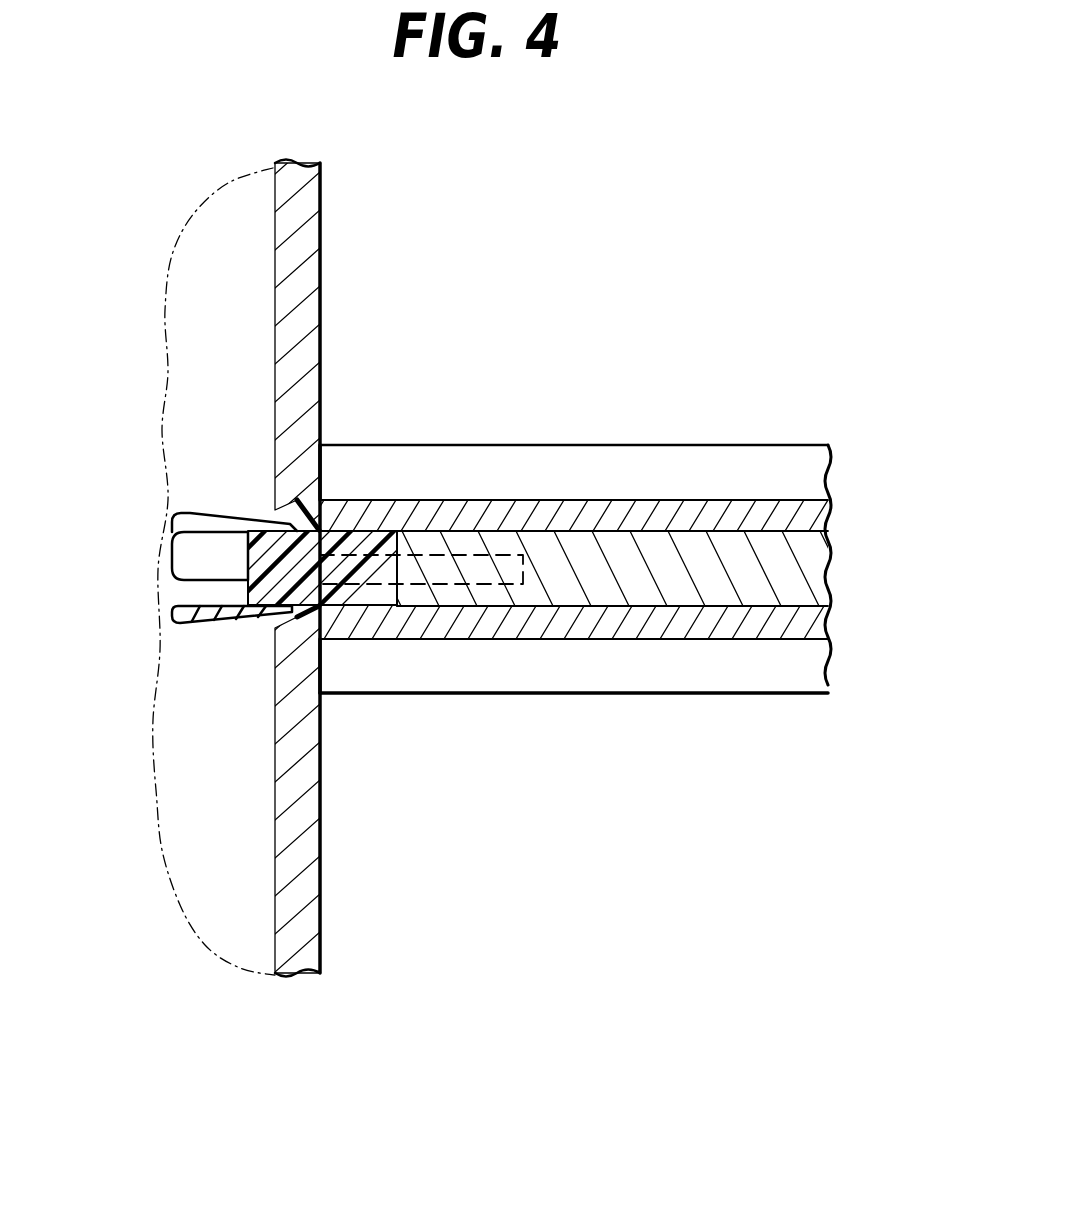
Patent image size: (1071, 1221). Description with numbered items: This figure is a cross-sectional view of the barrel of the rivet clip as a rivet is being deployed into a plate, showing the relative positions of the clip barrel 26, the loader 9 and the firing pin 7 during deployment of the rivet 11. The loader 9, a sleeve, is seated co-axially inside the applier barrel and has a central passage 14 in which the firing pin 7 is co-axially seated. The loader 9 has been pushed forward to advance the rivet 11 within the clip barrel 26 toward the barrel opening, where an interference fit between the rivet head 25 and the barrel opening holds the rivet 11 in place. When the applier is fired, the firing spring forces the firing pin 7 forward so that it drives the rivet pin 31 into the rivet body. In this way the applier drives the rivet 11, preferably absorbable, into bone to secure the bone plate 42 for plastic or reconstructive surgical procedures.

The firing pin 7 is at (813, 563).
The loader 9 is at (826, 517).
The rivet 11 is at (168, 553).
The central passage 14 is at (712, 533).
The rivet head 25 is at (292, 513).
The clip barrel 26 is at (637, 694).
The rivet pin 31 is at (252, 585).
The bone plate 42 is at (305, 975).